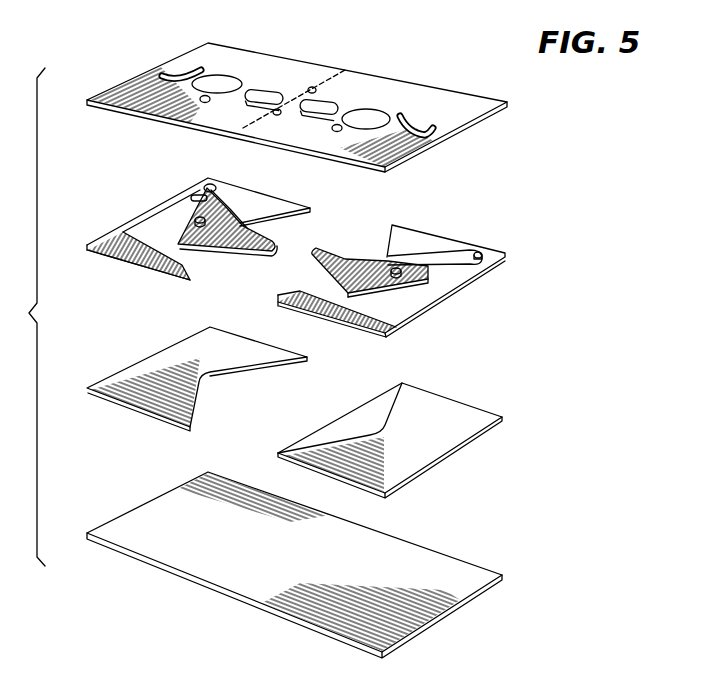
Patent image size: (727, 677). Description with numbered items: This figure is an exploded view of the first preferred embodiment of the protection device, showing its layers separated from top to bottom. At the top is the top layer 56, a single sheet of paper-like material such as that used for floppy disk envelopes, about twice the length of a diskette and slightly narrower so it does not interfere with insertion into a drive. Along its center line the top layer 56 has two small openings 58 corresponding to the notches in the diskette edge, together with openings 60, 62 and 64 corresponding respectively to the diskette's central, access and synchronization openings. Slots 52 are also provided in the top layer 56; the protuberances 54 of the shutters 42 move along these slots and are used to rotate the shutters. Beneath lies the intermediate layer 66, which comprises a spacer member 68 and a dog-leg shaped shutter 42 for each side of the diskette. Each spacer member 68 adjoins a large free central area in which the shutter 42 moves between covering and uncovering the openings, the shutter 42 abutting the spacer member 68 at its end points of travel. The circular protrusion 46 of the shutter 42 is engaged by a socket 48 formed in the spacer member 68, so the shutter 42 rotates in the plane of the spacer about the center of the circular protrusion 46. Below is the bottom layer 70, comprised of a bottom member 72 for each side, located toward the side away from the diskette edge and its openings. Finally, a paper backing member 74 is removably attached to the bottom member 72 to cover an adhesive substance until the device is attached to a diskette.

The shutter 42 is at (230, 200).
The circular protrusion 46 is at (478, 252).
The socket 48 is at (478, 262).
The slot 52 is at (177, 63).
The protuberance 54 is at (196, 219).
The top layer 56 is at (492, 90).
The small opening 58 is at (313, 87).
The opening 60 is at (217, 76).
The opening 62 is at (265, 91).
The opening 64 is at (201, 102).
The intermediate layer 66 is at (118, 212).
The spacer member 68 is at (147, 266).
The bottom layer 70 is at (130, 356).
The bottom member 72 is at (195, 343).
The backing member 74 is at (172, 557).